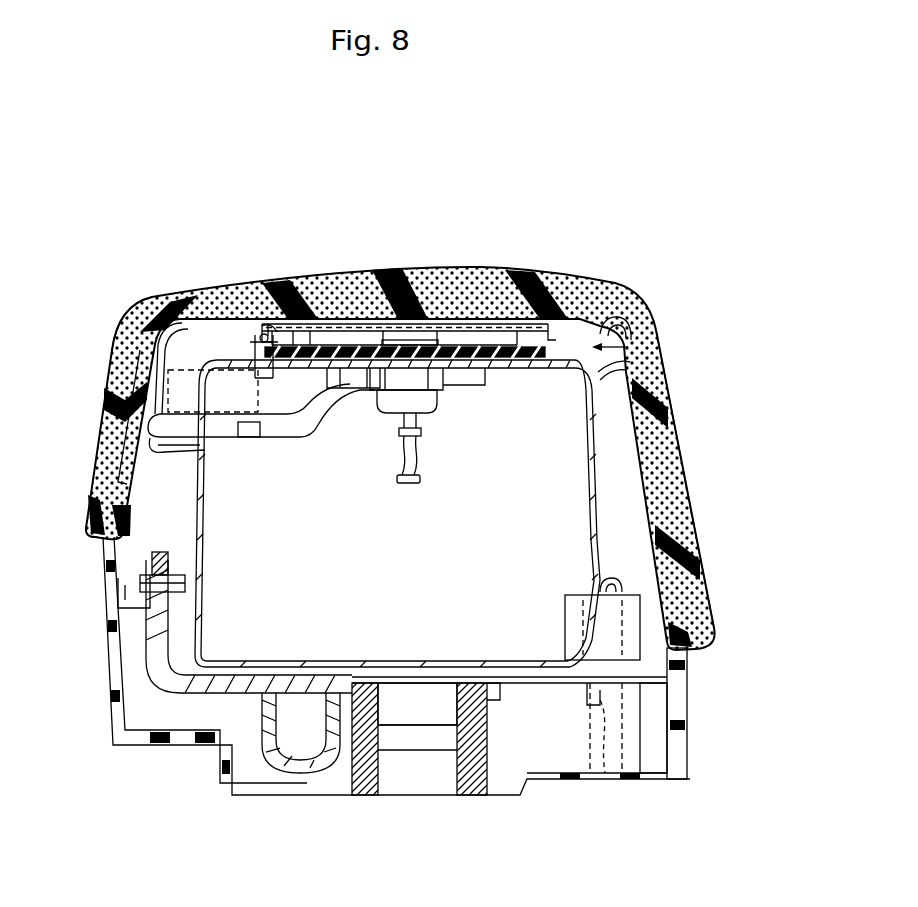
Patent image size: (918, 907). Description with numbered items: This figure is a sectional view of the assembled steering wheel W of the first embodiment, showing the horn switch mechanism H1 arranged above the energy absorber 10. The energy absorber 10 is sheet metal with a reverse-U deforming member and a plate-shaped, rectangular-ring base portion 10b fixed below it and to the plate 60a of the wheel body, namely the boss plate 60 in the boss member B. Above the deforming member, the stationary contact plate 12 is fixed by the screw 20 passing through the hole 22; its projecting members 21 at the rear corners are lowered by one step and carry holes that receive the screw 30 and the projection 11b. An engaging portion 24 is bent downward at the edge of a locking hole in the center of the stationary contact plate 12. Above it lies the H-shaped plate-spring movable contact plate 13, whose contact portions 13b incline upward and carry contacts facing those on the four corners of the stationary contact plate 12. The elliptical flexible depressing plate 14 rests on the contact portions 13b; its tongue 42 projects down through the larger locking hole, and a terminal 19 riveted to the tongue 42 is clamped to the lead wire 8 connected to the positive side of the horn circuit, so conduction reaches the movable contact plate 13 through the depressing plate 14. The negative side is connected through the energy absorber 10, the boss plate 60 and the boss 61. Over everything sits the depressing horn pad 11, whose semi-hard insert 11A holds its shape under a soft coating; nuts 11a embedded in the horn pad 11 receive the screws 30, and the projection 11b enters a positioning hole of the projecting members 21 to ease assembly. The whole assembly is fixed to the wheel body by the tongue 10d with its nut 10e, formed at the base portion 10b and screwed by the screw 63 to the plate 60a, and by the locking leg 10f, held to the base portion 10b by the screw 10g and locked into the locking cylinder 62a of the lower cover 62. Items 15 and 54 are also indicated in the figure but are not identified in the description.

The lead wire 8 is at (425, 483).
The energy absorber 10 is at (212, 548).
The base portion 10b is at (300, 661).
The tongue 10d is at (160, 553).
The nut 10e is at (166, 575).
The locking leg 10f is at (617, 779).
The screw 10g is at (612, 582).
The depressing horn pad 11 is at (495, 285).
The nut 11a is at (135, 328).
The insert 11A is at (690, 526).
The projection 11b is at (250, 440).
The stationary contact plate 12 is at (600, 365).
The movable contact plate 13 is at (441, 324).
The contact portions 13b is at (560, 333).
The depressing plate 14 is at (344, 324).
The partition plate (51) 15 is at (510, 370).
The terminal 19 is at (426, 433).
The screw 20 is at (260, 336).
The projecting members 21 is at (150, 392).
The hole 22 is at (335, 390).
The engaging portion 24 is at (383, 395).
The screw 30 is at (180, 447).
The tongue 42 is at (364, 347).
The valve body 54 is at (440, 400).
The boss plate 60 is at (200, 720).
The plate 60a is at (145, 657).
The boss 61 is at (469, 787).
The lower cover 62 is at (667, 780).
The locking cylinder 62a is at (642, 702).
The screw 63 is at (118, 600).
The horn switch mechanism H1 is at (628, 347).
The steering wheel W is at (678, 185).
The boss member B is at (373, 826).